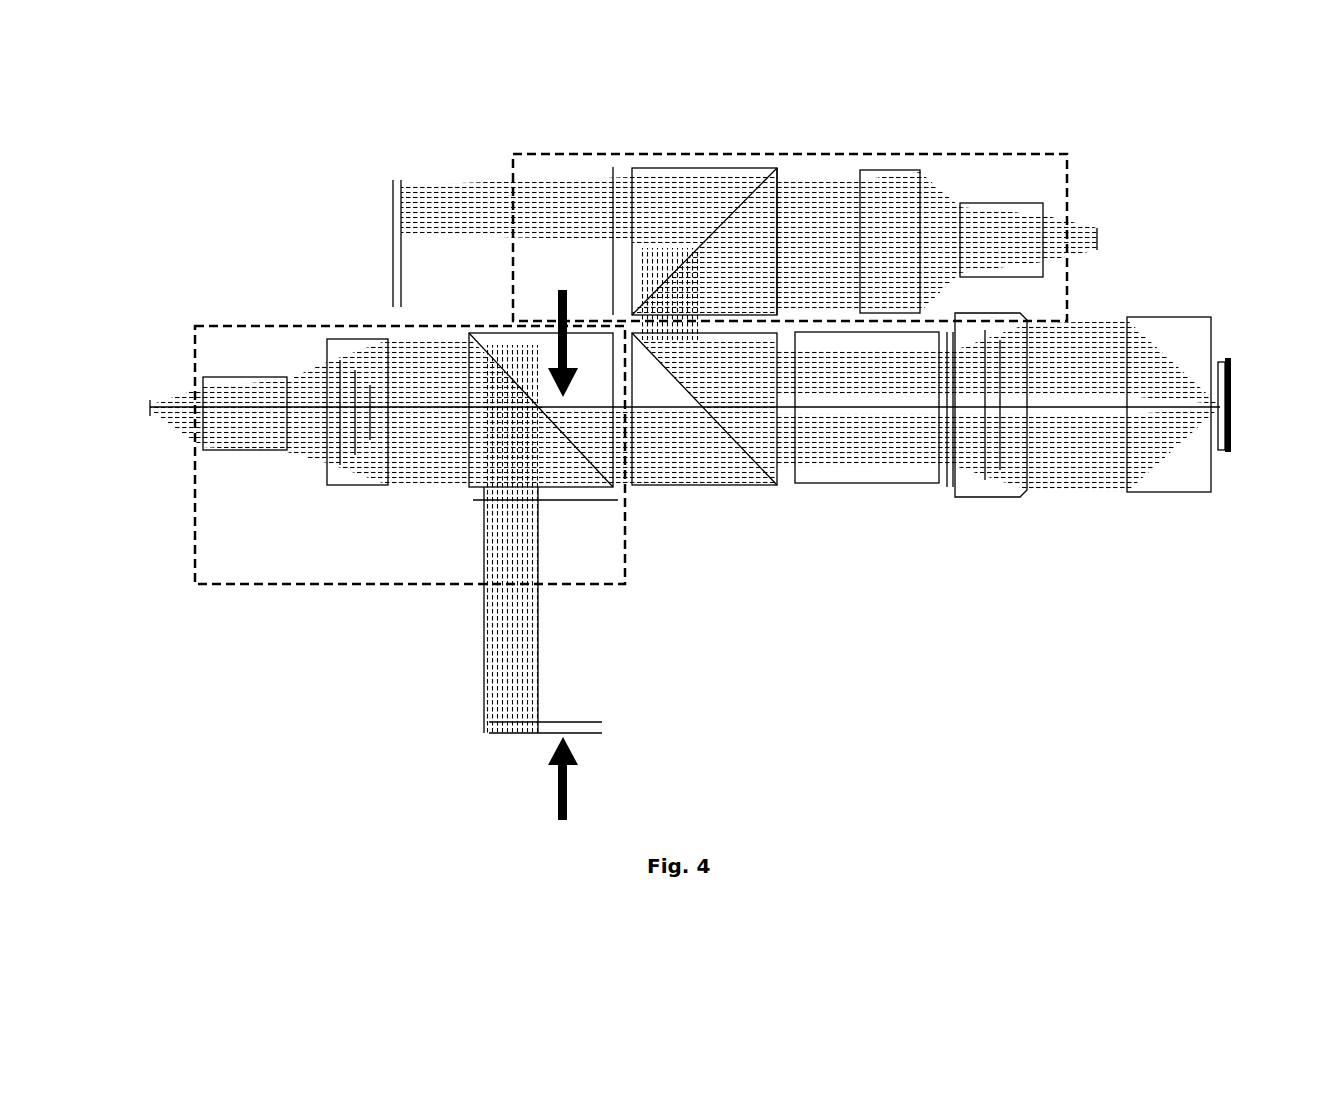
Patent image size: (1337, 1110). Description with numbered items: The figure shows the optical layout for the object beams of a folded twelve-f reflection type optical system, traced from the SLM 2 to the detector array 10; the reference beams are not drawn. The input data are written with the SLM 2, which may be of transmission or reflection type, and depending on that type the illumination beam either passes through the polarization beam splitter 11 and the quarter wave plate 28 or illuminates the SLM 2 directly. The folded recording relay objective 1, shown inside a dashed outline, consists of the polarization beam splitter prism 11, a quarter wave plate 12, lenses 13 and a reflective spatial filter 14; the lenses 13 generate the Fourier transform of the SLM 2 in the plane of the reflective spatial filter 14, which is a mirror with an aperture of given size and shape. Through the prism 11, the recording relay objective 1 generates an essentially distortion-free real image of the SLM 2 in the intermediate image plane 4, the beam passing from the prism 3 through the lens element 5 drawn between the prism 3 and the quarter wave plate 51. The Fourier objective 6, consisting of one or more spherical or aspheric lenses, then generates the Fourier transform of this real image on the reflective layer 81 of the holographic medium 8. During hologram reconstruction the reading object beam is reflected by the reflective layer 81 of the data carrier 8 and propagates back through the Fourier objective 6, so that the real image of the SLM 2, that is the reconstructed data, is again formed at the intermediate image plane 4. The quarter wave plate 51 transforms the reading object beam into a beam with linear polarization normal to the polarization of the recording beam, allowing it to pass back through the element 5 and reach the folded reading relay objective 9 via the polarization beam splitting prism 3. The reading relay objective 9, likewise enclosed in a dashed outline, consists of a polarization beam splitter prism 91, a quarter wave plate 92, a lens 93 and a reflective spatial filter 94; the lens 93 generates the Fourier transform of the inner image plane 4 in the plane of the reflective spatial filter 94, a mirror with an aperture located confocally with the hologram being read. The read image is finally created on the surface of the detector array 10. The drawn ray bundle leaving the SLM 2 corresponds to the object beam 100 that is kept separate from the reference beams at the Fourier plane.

The folded recording relay objective 1 is at (266, 588).
The SLM 2 is at (583, 733).
The polarization beam splitting prism 3 is at (668, 397).
The intermediate image plane 4 is at (950, 474).
The lens group 5 is at (873, 480).
The Fourier objective 6 is at (1168, 478).
The holographic medium 8 is at (1233, 437).
The folded reading relay objective 9 is at (561, 152).
The detector array 10 is at (392, 236).
The polarization beam splitter prism 11 is at (586, 392).
The quarter wave plate 12 is at (482, 516).
The lenses 13 is at (348, 504).
The reflective spatial filter 14 is at (152, 416).
The quarter wave plate 28 is at (618, 507).
The quarter wave plate 51 is at (937, 480).
The reflective layer 81 is at (1233, 372).
The polarization beam splitter prism 91 is at (649, 261).
The quarter wave plate 92 is at (775, 168).
The lens 93 is at (1028, 217).
The reflective spatial filter 94 is at (1099, 240).
The object beam 100 is at (497, 668).